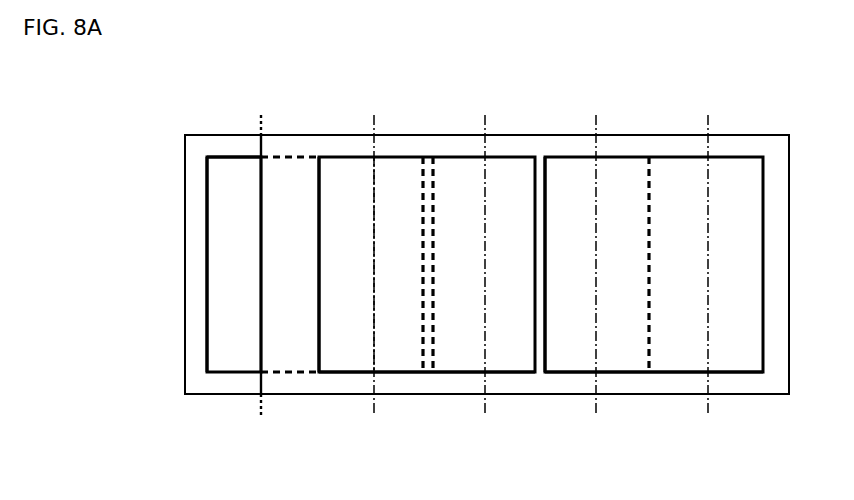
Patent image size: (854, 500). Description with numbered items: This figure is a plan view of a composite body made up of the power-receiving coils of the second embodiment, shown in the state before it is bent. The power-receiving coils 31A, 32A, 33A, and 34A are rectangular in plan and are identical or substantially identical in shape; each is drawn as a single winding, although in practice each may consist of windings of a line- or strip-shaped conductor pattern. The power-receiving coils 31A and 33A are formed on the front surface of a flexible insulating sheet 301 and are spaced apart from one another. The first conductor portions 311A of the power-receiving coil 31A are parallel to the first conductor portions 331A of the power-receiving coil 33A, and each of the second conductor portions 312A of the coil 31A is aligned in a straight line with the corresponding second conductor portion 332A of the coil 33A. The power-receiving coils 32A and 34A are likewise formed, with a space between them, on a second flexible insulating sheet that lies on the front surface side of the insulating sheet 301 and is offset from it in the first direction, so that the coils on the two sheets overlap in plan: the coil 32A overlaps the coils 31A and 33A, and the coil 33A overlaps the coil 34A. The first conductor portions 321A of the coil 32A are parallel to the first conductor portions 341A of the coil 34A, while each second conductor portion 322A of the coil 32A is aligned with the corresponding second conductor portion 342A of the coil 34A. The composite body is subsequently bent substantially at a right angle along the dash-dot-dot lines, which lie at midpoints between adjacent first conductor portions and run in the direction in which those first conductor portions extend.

The insulating sheet 301 is at (197, 383).
The power-receiving coil 31A is at (241, 220).
The first conductor portions 311A is at (210, 187).
The second conductor portions 312A is at (240, 155).
The power-receiving coil 32A is at (404, 319).
The first conductor portions 321A is at (320, 340).
The second conductor portions 322A is at (353, 373).
The power-receiving coil 33A is at (432, 231).
The first conductor portions 331A is at (435, 187).
The second conductor portions 332A is at (465, 155).
The power-receiving coil 34A is at (631, 319).
The first conductor portions 341A is at (545, 340).
The second conductor portions 342A is at (580, 373).